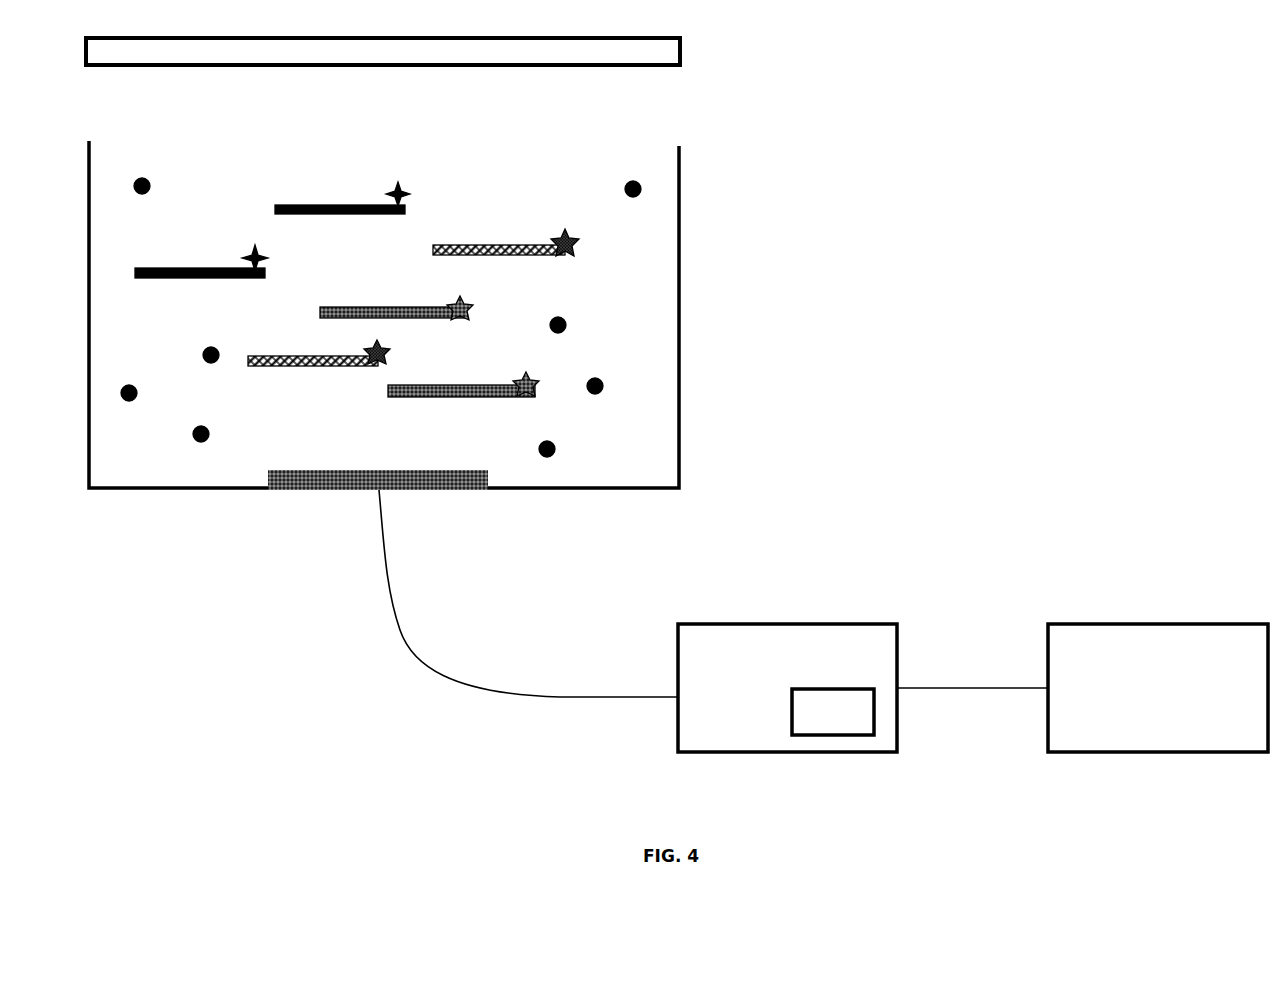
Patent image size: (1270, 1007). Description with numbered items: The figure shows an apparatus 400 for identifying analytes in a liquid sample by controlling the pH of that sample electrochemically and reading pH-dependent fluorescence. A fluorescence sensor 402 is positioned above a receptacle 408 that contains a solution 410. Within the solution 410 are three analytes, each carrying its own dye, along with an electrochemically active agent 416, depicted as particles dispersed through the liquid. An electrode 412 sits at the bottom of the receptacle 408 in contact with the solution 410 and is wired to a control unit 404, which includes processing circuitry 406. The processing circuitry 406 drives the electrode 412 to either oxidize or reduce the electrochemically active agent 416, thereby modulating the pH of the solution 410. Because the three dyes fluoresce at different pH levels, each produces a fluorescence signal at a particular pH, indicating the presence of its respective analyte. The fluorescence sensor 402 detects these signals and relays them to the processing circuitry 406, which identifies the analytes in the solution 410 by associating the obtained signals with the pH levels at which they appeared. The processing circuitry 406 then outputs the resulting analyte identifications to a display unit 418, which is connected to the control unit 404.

The apparatus 400 is at (1024, 133).
The fluorescence sensor 402 is at (680, 52).
The control unit 404 is at (787, 688).
The processing circuitry 406 is at (833, 712).
The receptacle 408 is at (680, 291).
The solution 410 is at (638, 252).
The electrode 412 is at (302, 488).
The electrochemically active agent 416 is at (539, 450).
The display unit 418 is at (1158, 688).